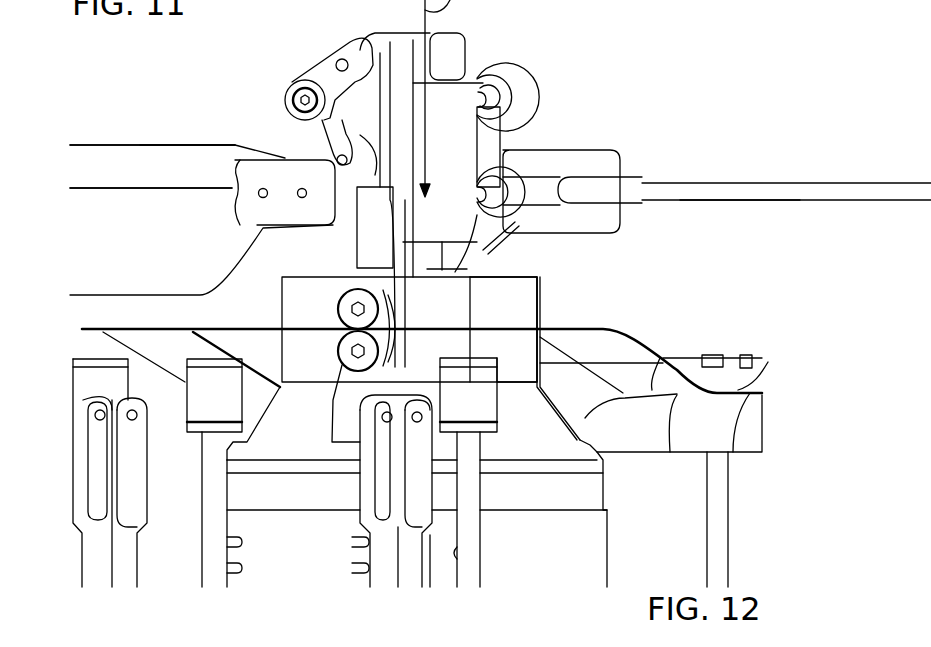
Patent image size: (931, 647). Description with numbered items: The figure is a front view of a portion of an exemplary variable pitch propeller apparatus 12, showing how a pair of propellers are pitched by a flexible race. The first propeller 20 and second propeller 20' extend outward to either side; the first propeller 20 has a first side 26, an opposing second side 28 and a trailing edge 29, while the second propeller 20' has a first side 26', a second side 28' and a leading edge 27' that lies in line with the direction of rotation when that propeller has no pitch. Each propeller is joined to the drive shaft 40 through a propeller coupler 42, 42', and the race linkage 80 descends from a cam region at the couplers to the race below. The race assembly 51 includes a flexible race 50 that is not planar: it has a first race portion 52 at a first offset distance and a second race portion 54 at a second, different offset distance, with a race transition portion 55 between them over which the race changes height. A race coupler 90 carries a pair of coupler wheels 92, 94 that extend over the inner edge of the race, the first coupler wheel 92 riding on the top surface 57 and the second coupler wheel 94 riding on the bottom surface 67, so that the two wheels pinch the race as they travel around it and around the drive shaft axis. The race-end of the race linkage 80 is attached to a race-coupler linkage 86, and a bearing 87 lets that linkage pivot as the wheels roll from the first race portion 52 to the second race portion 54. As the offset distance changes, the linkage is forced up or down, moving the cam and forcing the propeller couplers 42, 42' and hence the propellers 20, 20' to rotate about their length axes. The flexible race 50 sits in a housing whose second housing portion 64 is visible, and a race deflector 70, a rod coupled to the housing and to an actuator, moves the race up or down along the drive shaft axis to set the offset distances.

The variable pitch propeller apparatus 12 is at (507, 54).
The first propeller 20 is at (177, 140).
The first side of propeller 26 is at (152, 107).
The leading edge of second propeller 27' is at (786, 161).
The second side of propeller 28 is at (151, 204).
The second side of second propeller 28' is at (740, 235).
The trailing edge 29 is at (170, 150).
The second propeller 20' is at (617, 159).
The first side of second propeller 26' is at (786, 147).
The propeller coupler 42 is at (285, 162).
The second propeller coupler 42' is at (561, 157).
The drive shaft 40 is at (470, 257).
The flexible race 50 is at (655, 357).
The race assembly 51 is at (747, 358).
The first race portion 52 is at (498, 327).
The second race portion 54 is at (722, 358).
The race transition portion 55 is at (627, 363).
The top surface of race 57 is at (568, 320).
The second housing portion 64 is at (768, 362).
The bottom surface of race 67 is at (631, 420).
The race deflector 70 is at (368, 478).
The race linkage 80 is at (385, 263).
The race-coupler linkage 86 is at (393, 307).
The bearing 87 is at (392, 347).
The race coupler 90 is at (282, 328).
The first coupler wheel 92 is at (345, 293).
The second coupler wheel 94 is at (350, 358).